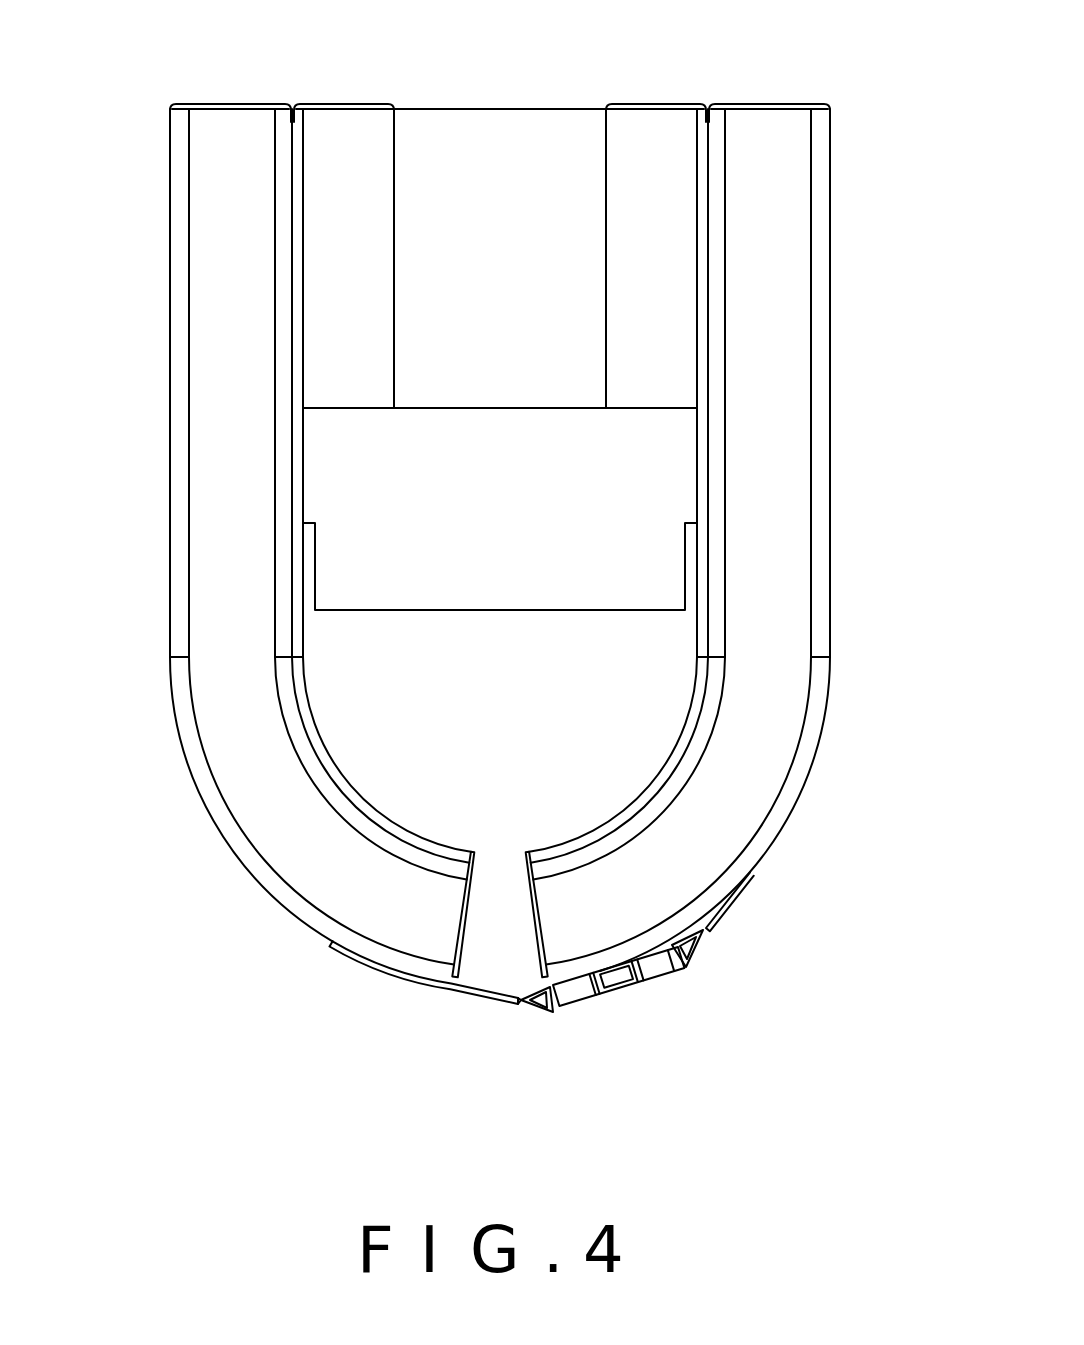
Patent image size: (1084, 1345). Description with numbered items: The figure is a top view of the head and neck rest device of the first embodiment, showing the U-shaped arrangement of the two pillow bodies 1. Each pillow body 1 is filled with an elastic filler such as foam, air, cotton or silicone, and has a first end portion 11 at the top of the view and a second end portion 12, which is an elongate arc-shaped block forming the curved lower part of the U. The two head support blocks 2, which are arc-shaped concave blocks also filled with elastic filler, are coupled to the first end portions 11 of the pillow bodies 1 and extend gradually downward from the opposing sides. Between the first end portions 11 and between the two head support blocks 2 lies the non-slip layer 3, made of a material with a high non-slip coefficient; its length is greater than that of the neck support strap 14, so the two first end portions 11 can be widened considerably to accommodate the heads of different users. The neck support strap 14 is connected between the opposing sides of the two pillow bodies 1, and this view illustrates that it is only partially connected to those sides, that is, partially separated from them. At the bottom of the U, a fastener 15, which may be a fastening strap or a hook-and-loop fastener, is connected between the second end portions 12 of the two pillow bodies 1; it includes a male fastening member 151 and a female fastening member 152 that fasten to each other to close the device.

The pillow body 1 is at (170, 345).
The first end portion 11 is at (215, 165).
The second end portion 12 is at (293, 865).
The neck support strap 14 is at (393, 479).
The fastener 15 is at (688, 1062).
The male fastening member 151 is at (655, 963).
The female fastening member 152 is at (577, 1000).
The head support block 2 is at (352, 143).
The non-slip layer 3 is at (508, 147).